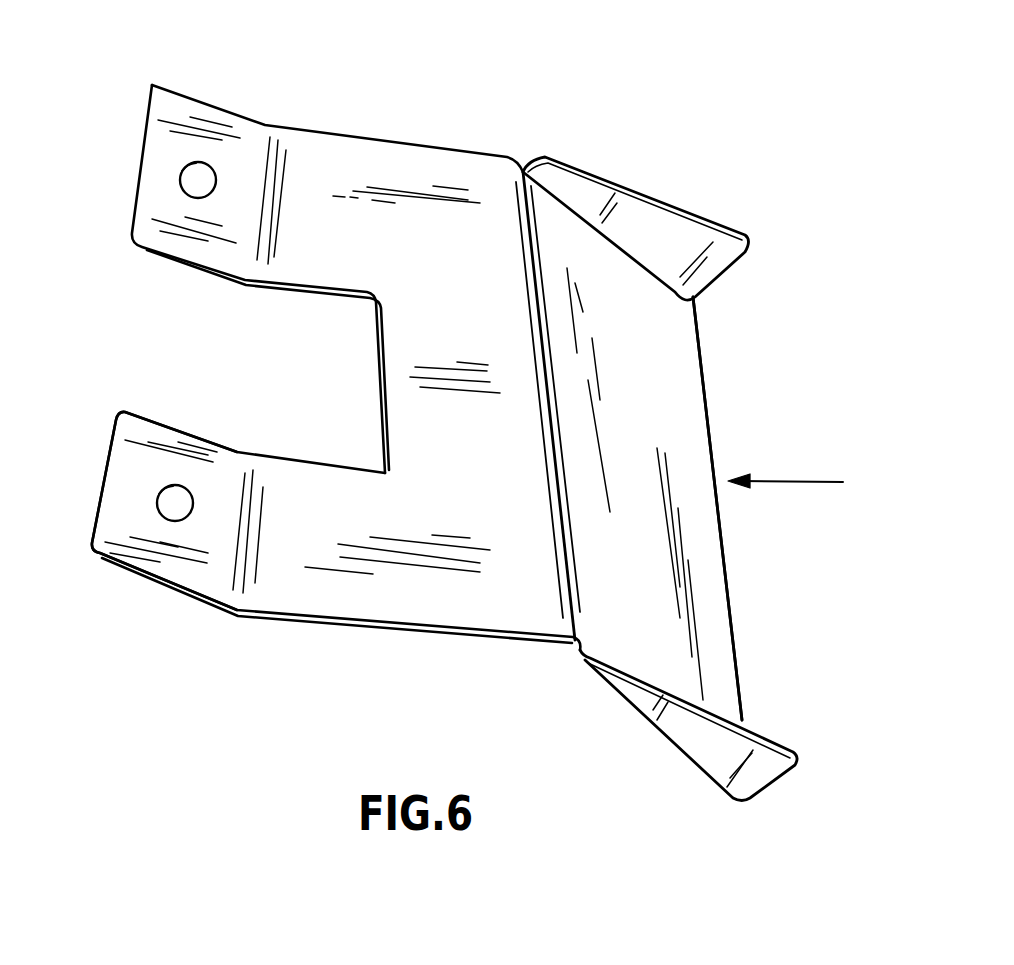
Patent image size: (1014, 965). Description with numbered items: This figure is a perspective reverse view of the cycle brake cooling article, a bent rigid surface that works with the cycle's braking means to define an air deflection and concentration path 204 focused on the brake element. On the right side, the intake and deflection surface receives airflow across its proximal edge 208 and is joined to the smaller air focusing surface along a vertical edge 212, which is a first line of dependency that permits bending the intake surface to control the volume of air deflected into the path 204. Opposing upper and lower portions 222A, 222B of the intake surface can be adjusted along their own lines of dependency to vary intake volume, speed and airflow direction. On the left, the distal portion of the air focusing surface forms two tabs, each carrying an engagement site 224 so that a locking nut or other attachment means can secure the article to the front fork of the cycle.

The engagement sites 224 is at (183, 177).
The vertical edge 212 is at (552, 510).
The proximal edge 208 is at (740, 673).
The air deflection and concentration path 204 is at (794, 501).
The upper portion of the intake surface 222A is at (670, 233).
The lower portion of the intake surface 222B is at (767, 767).